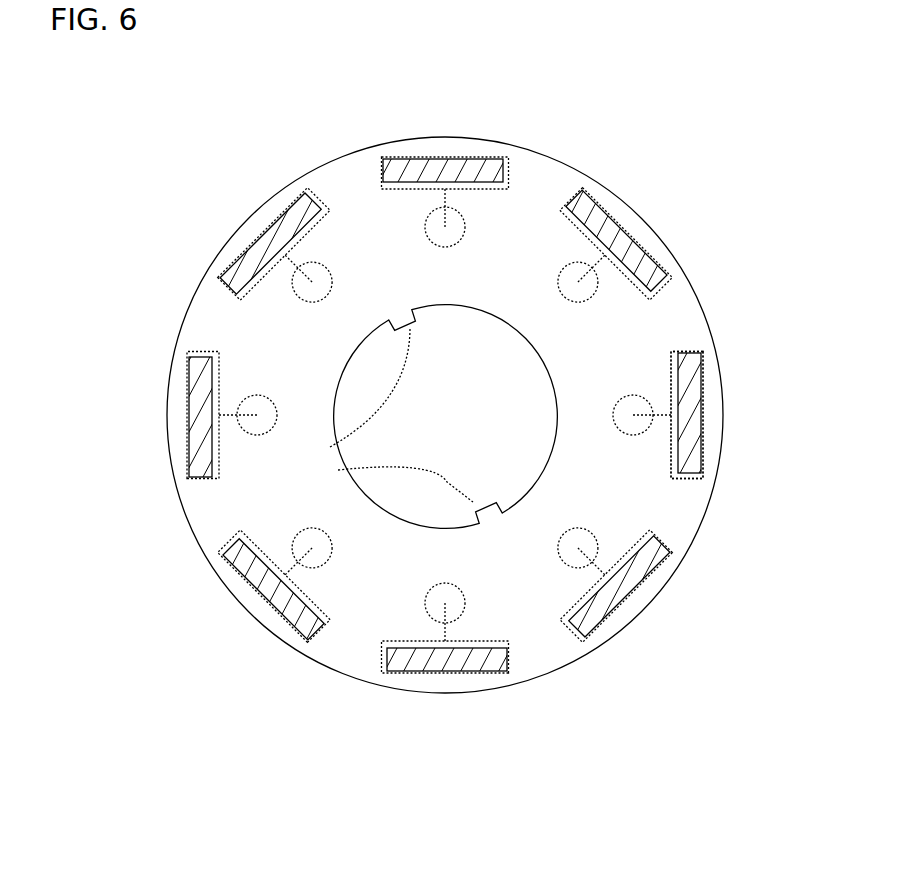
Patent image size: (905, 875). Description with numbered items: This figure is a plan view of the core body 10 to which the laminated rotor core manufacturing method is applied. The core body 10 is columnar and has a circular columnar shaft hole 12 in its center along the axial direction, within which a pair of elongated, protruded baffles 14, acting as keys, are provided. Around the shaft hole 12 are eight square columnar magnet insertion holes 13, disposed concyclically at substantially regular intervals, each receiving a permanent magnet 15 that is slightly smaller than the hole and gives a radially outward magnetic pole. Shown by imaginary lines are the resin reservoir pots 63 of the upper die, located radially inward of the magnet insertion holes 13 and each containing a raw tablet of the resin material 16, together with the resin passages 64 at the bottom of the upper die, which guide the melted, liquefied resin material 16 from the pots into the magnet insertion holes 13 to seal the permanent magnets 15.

The core body 10 is at (705, 518).
The shaft hole 12 is at (405, 497).
The magnet insertion hole 13 is at (647, 305).
The baffle 14 is at (330, 447).
The permanent magnet 15 is at (623, 240).
The resin material 16 is at (697, 487).
The resin reservoir pot 63 is at (577, 263).
The resin passage 64 is at (313, 263).